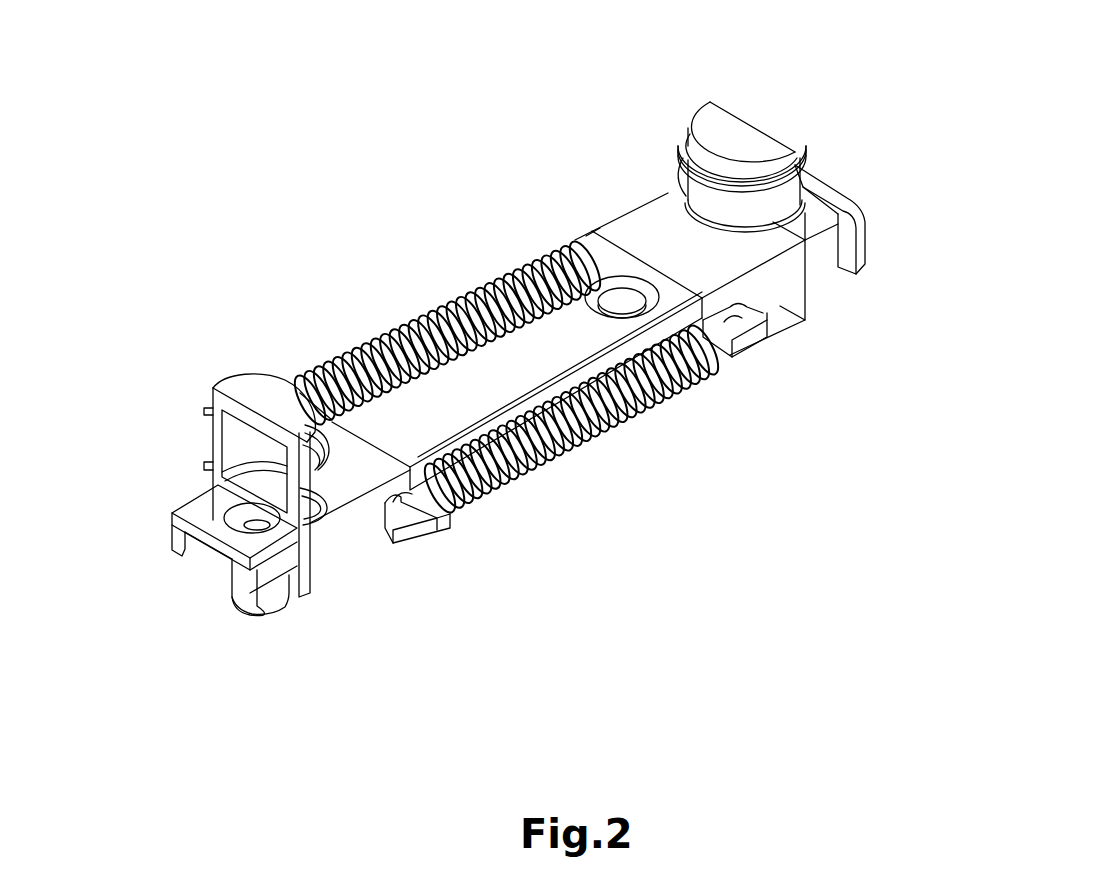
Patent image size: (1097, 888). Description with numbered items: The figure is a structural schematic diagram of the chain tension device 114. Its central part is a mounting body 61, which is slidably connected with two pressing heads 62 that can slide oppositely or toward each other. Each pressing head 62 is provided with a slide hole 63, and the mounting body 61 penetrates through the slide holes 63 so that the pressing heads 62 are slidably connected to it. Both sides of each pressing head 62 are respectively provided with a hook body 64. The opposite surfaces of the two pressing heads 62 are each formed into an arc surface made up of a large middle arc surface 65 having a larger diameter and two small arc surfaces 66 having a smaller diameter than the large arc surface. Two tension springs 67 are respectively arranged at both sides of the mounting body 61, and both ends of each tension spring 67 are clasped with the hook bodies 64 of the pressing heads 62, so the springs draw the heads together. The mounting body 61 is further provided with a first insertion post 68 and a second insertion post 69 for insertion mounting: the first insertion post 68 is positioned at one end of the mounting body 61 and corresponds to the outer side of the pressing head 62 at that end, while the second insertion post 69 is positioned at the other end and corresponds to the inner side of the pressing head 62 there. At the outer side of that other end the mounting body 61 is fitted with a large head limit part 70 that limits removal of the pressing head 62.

The mounting body 61 is at (497, 362).
The pressing head 62 is at (750, 137).
The slide hole 63 is at (593, 247).
The hook body 64 is at (423, 533).
The large middle arc surface 65 is at (680, 175).
The small arc surface 66 is at (305, 448).
The tension spring 67 is at (395, 325).
The first insertion post 68 is at (233, 592).
The second insertion post 69 is at (556, 262).
The tab 70 is at (856, 213).
The chain tension device 114 is at (563, 490).